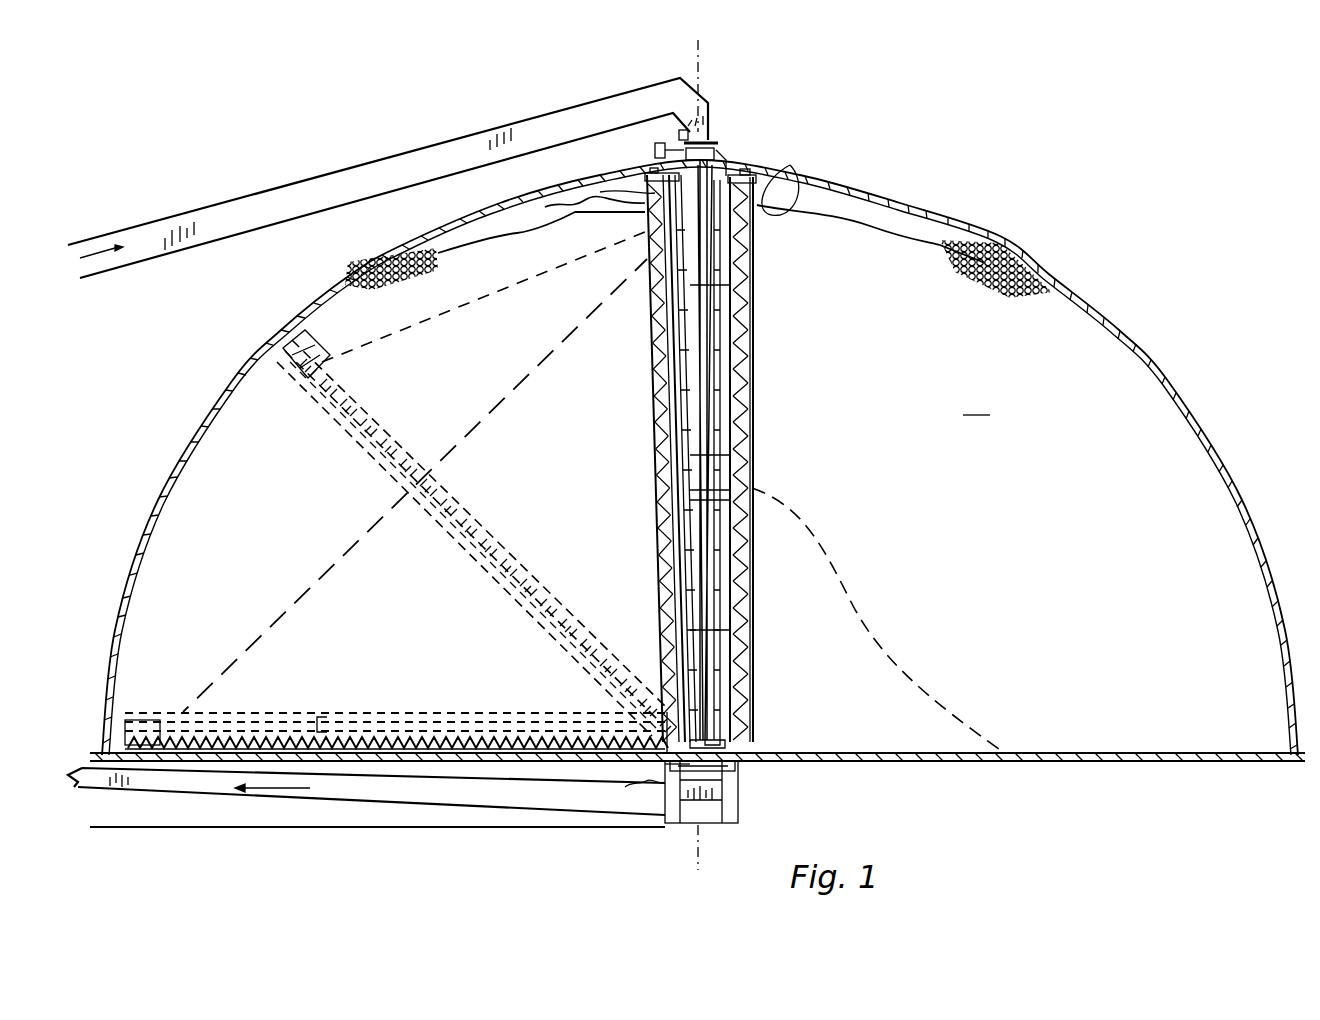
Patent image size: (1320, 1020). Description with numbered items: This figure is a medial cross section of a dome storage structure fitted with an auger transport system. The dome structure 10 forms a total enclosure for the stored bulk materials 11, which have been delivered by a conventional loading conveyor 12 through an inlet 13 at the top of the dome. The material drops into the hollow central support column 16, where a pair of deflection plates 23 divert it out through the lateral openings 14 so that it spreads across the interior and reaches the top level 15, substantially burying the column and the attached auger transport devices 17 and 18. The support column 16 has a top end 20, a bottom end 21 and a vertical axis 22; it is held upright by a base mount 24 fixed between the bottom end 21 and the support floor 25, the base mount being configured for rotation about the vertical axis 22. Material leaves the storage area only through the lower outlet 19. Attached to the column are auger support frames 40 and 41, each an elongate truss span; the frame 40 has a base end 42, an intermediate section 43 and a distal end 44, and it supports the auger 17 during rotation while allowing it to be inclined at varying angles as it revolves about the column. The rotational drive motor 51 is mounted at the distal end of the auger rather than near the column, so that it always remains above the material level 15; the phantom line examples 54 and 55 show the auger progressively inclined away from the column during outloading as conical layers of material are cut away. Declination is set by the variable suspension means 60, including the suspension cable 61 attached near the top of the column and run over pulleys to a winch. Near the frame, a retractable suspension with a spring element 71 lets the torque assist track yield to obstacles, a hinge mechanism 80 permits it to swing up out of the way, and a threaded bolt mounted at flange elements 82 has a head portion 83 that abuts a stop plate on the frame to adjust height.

The dome structure 10 is at (1085, 285).
The stored bulk materials 11 is at (990, 245).
The loading conveyor 12 is at (340, 168).
The inlet 13 is at (716, 150).
The lateral openings 14 is at (725, 158).
The top level 15 is at (905, 222).
The support column 16 is at (768, 272).
The auger transport device 17 is at (660, 405).
The second auger transport device 18 is at (765, 460).
The lower outlet 19 is at (735, 766).
The top end 20 is at (655, 150).
The bottom end 21 is at (738, 745).
The vertical axis 22 is at (698, 462).
The deflection plates 23 is at (790, 168).
The base mount 24 is at (735, 790).
The support floor 25 is at (905, 751).
The auger support frame 40 is at (650, 345).
The second auger support frame 41 is at (765, 365).
The base end 42 is at (745, 725).
The intermediate section 43 is at (752, 512).
The distal end 44 is at (642, 228).
The rotational drive motor 51 is at (632, 186).
The phantom line example 54 is at (400, 410).
The phantom line example 55 is at (285, 708).
The variable suspension means 60 is at (673, 130).
The suspension cable 61 is at (385, 338).
The spring element 71 is at (665, 764).
The hinge mechanism 80 is at (885, 635).
The flange elements 82 is at (368, 792).
The head portion 83 is at (660, 800).